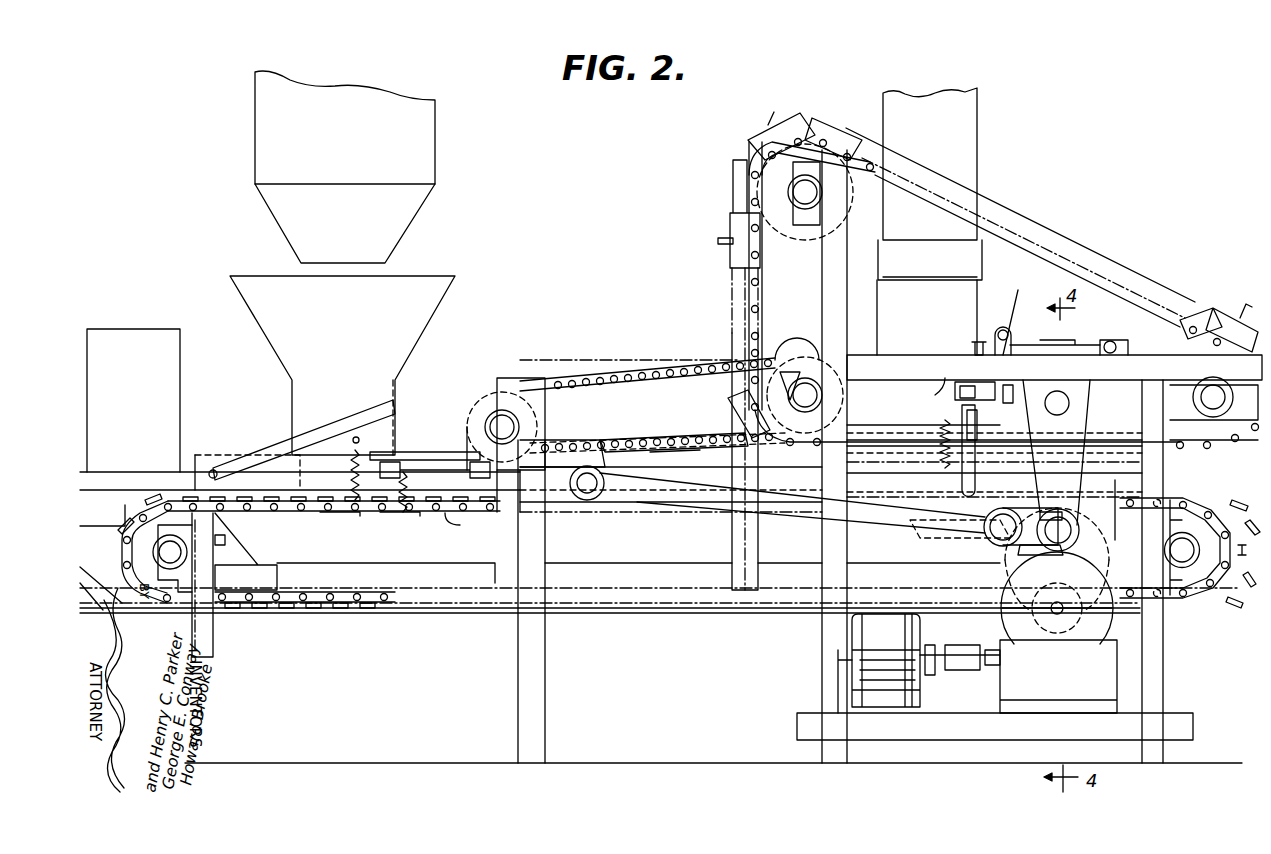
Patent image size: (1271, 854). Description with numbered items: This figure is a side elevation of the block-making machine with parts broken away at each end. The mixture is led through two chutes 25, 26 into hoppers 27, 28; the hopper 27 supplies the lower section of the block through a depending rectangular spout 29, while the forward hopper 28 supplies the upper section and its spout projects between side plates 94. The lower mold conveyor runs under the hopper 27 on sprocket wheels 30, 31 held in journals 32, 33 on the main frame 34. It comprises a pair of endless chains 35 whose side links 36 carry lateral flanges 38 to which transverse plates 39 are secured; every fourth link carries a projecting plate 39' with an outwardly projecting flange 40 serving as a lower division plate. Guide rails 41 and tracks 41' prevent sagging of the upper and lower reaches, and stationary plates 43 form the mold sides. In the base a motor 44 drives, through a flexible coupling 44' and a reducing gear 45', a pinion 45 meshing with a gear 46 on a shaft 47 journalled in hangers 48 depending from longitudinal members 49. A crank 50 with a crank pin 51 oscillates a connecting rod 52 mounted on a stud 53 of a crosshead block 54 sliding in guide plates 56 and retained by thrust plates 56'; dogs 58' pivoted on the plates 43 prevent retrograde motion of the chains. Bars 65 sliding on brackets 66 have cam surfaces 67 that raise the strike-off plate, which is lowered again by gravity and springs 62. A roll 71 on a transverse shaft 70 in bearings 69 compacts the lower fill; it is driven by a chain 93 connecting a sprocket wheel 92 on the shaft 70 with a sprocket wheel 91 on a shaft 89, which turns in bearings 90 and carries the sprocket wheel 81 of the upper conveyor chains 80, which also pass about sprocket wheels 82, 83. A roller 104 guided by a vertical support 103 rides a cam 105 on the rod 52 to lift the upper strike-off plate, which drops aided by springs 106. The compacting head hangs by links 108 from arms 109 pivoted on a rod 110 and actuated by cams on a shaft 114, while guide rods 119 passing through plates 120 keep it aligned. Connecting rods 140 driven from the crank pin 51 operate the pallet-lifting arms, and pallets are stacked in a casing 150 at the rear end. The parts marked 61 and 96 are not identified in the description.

The chute 25 is at (428, 160).
The chute 26 is at (966, 160).
The hopper 27 is at (428, 318).
The hopper 28 is at (970, 295).
The depending rectangular spout 29 is at (290, 424).
The sprocket wheel 30 is at (225, 548).
The sprocket wheel 31 is at (1128, 566).
The journal 32 is at (158, 538).
The journal 33 is at (1186, 545).
The main frame 34 is at (214, 646).
The endless chain 35 is at (365, 514).
The side link 36 is at (470, 514).
The lateral flange 38 is at (422, 514).
The transverse plate 39 is at (339, 520).
The transverse plate 39' is at (300, 619).
The longitudinal flange 40 is at (350, 628).
The guide rail 41 is at (671, 471).
The track 41' is at (660, 613).
The stationary plate 43 is at (213, 468).
The motor 44 is at (856, 663).
The flexible coupling 44' is at (960, 675).
The pinion 45 is at (1058, 632).
The reducing gear 45' is at (1037, 624).
The gear 46 is at (1010, 574).
The shaft 47 is at (1079, 530).
The hanger 48 is at (1088, 412).
The longitudinal member 49 is at (935, 396).
The crank 50 is at (1005, 550).
The crank pin 51 is at (1010, 527).
The connecting rod 52 is at (912, 535).
The stud 53 is at (587, 500).
The crosshead block 54 is at (555, 445).
The guide plate 56 is at (674, 430).
The thrust plate 56' is at (675, 431).
The dog 58' is at (503, 514).
The gate lever 61 is at (372, 404).
The spring 62 is at (352, 450).
The bar 65 is at (440, 455).
The bracket 66 is at (468, 468).
The cam surface 67 is at (360, 446).
The bearing 69 is at (498, 380).
The transverse shaft 70 is at (503, 410).
The roll 71 is at (475, 400).
The endless chain 80 is at (762, 258).
The sprocket wheel 81 is at (803, 350).
The sprocket wheel 82 is at (848, 214).
The sprocket wheel 83 is at (1195, 334).
The shaft 89 is at (822, 380).
The bearing 90 is at (818, 354).
The sprocket wheel 91 is at (740, 396).
The sprocket wheel 92 is at (465, 420).
The chain 93 is at (668, 376).
The side plate 94 is at (730, 266).
The stud 96 is at (718, 242).
The vertical support 103 is at (978, 416).
The roller 104 is at (1000, 480).
The cam 105 is at (912, 520).
The spring 106 is at (945, 472).
The link 108 is at (1008, 330).
The arm 109 is at (1040, 328).
The rod 110 is at (1112, 341).
The shaft 114 is at (1052, 400).
The vertical guide rod 119 is at (972, 350).
The plate 120 is at (958, 400).
The connecting rod 140 is at (1065, 512).
The casing 150 is at (170, 394).